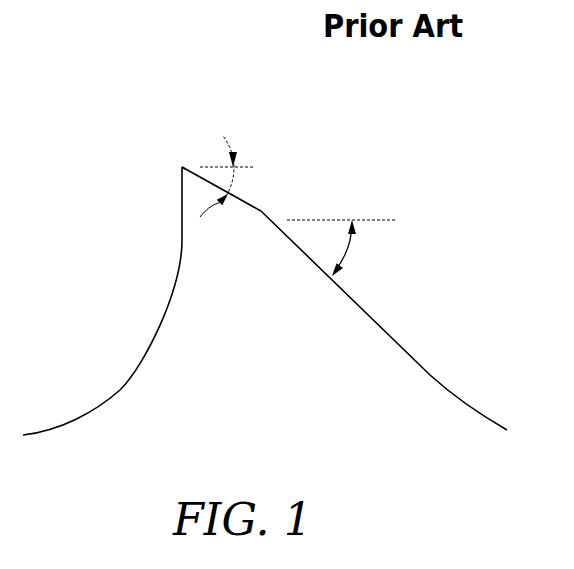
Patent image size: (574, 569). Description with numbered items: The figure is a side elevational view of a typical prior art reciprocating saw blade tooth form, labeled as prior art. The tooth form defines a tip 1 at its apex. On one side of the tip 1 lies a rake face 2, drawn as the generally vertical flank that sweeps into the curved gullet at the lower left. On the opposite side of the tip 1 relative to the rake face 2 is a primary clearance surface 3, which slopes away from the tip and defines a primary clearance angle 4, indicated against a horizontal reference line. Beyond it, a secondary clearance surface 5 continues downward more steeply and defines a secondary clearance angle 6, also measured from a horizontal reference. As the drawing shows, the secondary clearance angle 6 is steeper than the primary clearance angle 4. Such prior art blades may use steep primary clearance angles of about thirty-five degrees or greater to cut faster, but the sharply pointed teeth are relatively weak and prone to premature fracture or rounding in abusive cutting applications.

The tip 1 is at (182, 166).
The rake face 2 is at (182, 198).
The primary clearance surface 3 is at (256, 207).
The primary clearance angle 4 is at (233, 158).
The secondary clearance surface 5 is at (373, 316).
The secondary clearance angle 6 is at (349, 248).